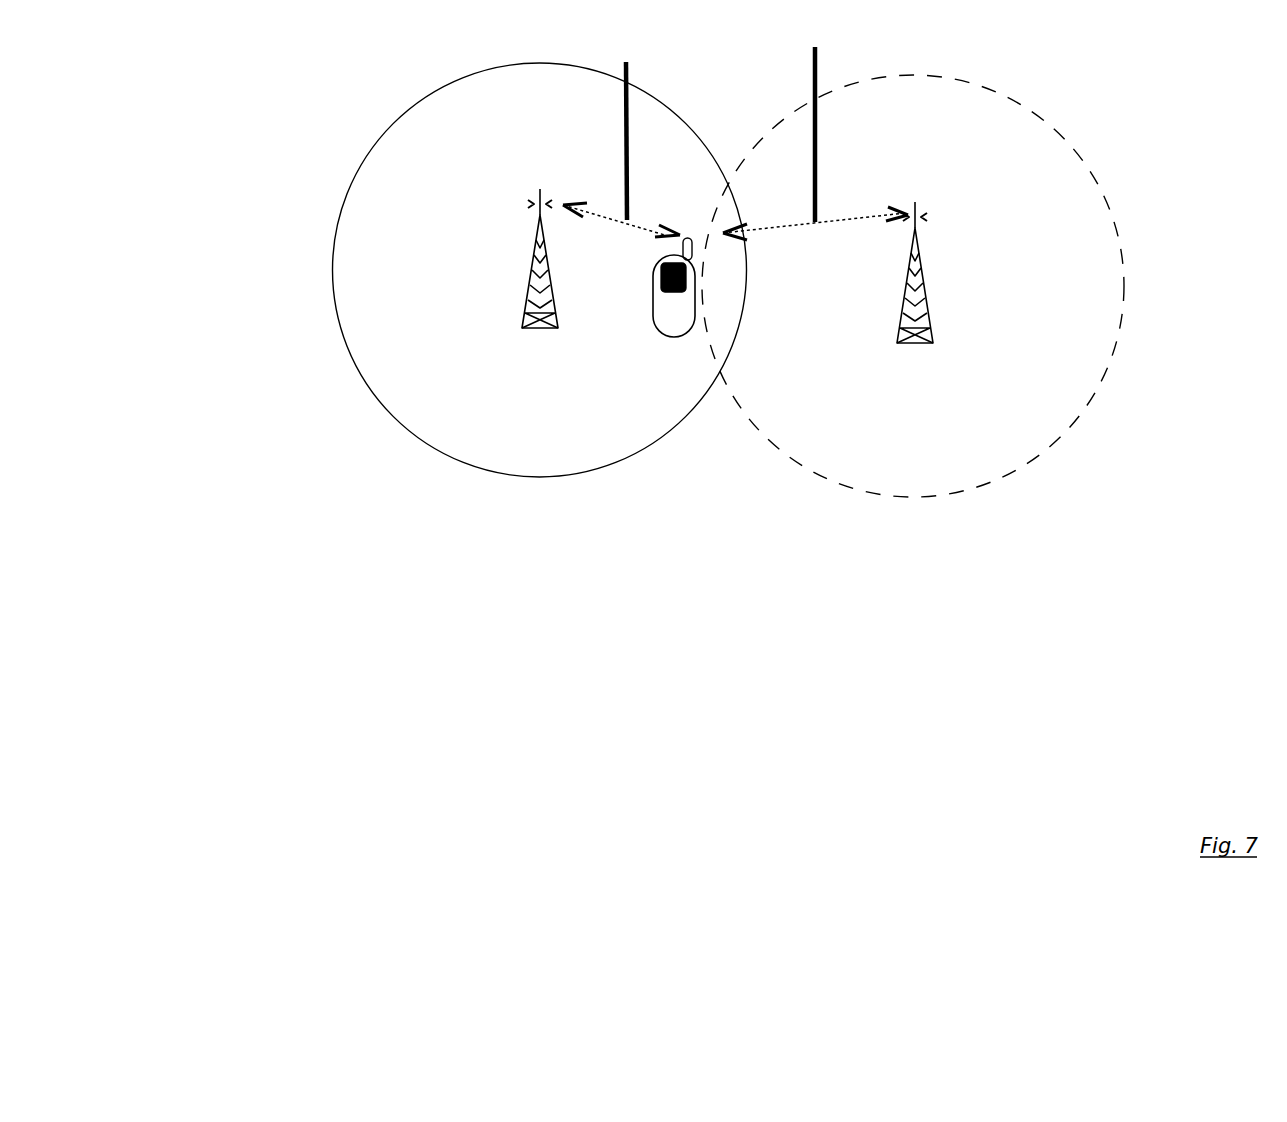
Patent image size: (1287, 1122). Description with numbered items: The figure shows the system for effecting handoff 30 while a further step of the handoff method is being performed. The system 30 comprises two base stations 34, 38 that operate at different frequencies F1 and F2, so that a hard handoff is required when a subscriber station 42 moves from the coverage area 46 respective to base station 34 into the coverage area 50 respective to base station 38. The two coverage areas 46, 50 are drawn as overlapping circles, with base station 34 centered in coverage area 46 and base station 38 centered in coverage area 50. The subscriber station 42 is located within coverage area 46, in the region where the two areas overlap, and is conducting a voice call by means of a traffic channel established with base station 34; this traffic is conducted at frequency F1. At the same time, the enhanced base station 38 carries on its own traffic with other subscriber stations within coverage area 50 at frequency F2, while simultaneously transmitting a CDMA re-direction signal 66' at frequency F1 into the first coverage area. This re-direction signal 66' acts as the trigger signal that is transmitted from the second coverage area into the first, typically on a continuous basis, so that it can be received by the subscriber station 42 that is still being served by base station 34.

The system for effecting handoff 30 is at (253, 634).
The base station 34 is at (553, 184).
The base station 38 is at (933, 197).
The subscriber station 42 is at (689, 322).
The coverage area 46 is at (352, 399).
The coverage area 50 is at (746, 434).
The CDMA re-direction signal 66' is at (804, 123).
The first frequency F1 is at (340, 196).
The second frequency F2 is at (1127, 230).